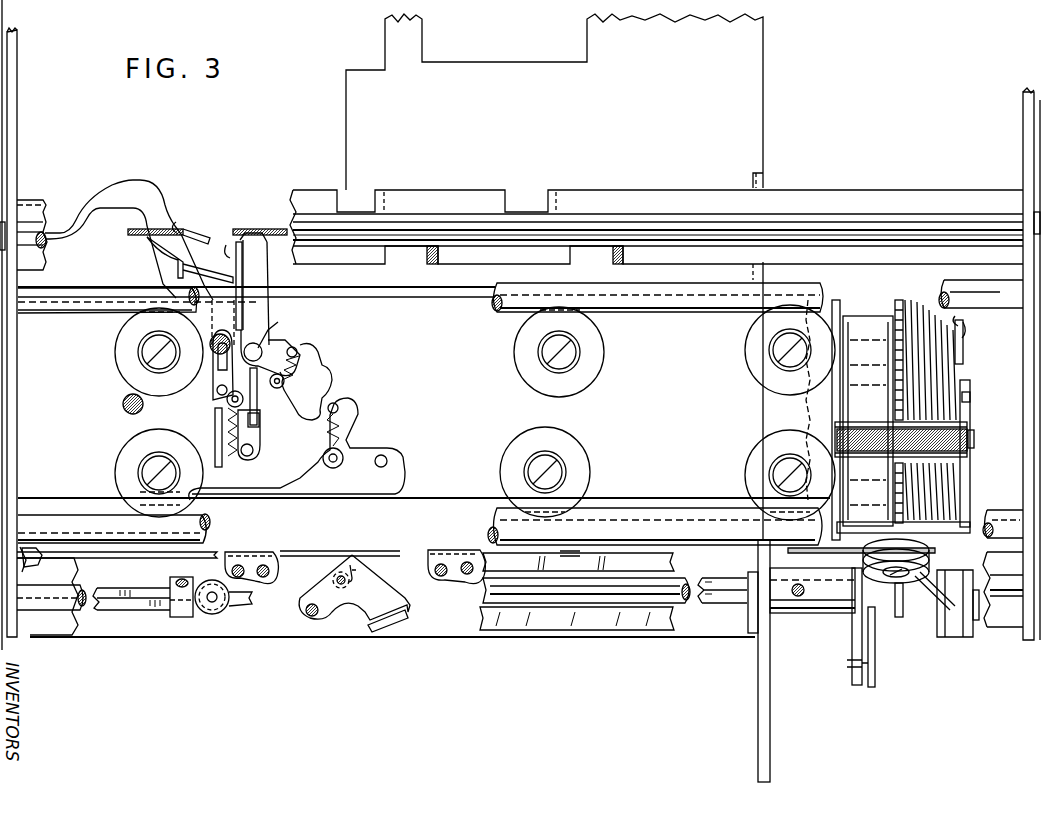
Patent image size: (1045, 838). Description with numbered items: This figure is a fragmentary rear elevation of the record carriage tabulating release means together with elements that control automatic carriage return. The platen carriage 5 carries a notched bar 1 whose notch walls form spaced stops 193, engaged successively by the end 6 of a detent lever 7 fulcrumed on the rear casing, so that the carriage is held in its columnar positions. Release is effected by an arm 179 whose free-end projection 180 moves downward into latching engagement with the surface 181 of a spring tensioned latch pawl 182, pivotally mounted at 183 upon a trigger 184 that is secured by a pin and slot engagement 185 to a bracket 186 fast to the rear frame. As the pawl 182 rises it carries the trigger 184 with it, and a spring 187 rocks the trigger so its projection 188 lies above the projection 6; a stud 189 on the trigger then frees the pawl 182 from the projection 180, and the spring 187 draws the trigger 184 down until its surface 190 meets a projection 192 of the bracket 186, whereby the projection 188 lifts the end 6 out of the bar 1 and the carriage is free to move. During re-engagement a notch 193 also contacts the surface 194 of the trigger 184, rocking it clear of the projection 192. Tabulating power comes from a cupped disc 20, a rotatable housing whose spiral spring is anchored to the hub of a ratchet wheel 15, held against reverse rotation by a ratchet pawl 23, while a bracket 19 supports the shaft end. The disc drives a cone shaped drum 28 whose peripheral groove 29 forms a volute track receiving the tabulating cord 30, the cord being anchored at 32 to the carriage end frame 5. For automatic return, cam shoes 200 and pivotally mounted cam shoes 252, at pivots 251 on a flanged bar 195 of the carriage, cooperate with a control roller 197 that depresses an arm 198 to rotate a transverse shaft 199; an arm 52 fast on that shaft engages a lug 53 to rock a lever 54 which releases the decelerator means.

The notched bar 1 is at (430, 197).
The platen carriage 5 is at (17, 133).
The end of detent lever 6 is at (195, 230).
The detent lever 7 is at (108, 184).
The ratchet wheel 15 is at (836, 395).
The bracket 19 is at (964, 488).
The cupped disc 20 is at (872, 335).
The ratchet pawl 23 is at (898, 302).
The cone shaped drum 28 is at (952, 365).
The groove 29 is at (960, 320).
The tabulating cord 30 is at (138, 553).
The cord anchor point 32 is at (44, 548).
The arm 52 is at (852, 636).
The lug 53 is at (850, 667).
The lever 54 is at (878, 650).
The arm 179 is at (256, 355).
The projection 180 is at (300, 402).
The surface 181 is at (268, 448).
The latch pawl 182 is at (298, 368).
The pivot 183 is at (262, 340).
The trigger 184 is at (276, 260).
The pin and slot engagement 185 is at (213, 390).
The bracket 186 is at (228, 292).
The spring 187 is at (222, 438).
The projection 188 is at (262, 212).
The stud 189 is at (284, 382).
The surface 190 is at (265, 285).
The projection 192 is at (173, 257).
The stops 193 is at (180, 233).
The surface 194 is at (226, 245).
The flanged bar 195 is at (550, 622).
The control roller 197 is at (213, 614).
The arm 198 is at (200, 617).
The transverse shaft 199 is at (130, 605).
The cam shoes 200 is at (252, 570).
The pivot mounting 251 is at (312, 616).
The cam shoes 252 is at (388, 628).